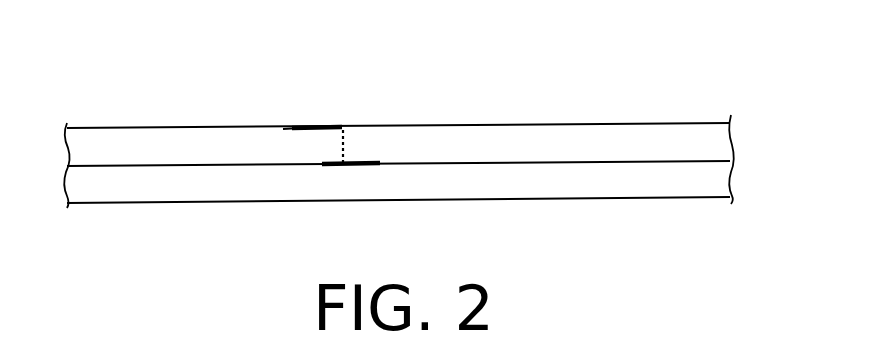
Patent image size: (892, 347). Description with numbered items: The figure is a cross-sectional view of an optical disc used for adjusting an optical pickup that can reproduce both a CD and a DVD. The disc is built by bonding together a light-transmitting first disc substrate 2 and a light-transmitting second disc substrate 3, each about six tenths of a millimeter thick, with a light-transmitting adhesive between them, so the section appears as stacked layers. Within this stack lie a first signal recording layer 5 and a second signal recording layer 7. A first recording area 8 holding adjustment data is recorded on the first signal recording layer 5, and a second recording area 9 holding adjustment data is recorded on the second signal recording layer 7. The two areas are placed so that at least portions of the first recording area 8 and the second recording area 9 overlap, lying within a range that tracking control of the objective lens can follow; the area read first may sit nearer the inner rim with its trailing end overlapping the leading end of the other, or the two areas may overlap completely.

The first disc substrate 2 is at (720, 143).
The second disc substrate 3 is at (720, 180).
The first signal recording layer 5 is at (282, 130).
The second signal recording layer 7 is at (243, 165).
The first recording area 8 is at (320, 127).
The second recording area 9 is at (373, 163).